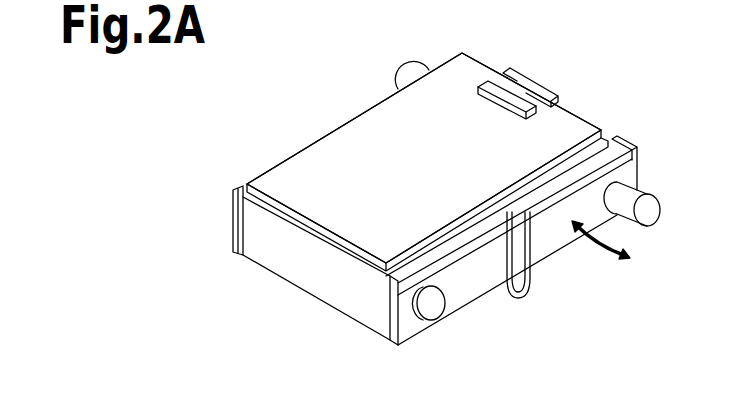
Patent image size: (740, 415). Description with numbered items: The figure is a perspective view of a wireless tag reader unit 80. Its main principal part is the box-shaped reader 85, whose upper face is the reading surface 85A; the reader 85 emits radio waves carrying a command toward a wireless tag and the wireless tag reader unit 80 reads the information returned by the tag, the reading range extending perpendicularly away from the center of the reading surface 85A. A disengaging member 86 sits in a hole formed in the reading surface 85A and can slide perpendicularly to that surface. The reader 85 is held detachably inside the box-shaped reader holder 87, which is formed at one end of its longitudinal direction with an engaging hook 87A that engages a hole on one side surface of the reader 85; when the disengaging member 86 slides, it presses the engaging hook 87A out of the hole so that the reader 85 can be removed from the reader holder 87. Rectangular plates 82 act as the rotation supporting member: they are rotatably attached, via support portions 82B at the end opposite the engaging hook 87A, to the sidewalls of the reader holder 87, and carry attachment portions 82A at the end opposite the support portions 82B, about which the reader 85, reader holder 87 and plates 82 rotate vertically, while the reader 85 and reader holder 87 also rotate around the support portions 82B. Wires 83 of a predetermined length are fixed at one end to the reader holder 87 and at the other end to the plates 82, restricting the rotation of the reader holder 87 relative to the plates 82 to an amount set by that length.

The wireless tag reader unit 80 is at (347, 97).
The reader 85 is at (331, 152).
The reading surface 85A is at (424, 158).
The disengaging member 86 is at (495, 86).
The reader holder 87 is at (255, 225).
The engaging hook 87A is at (545, 87).
The plates 82 is at (509, 203).
The attachment portions 82A is at (643, 177).
The support portions 82B is at (430, 337).
The wires 83 is at (518, 297).